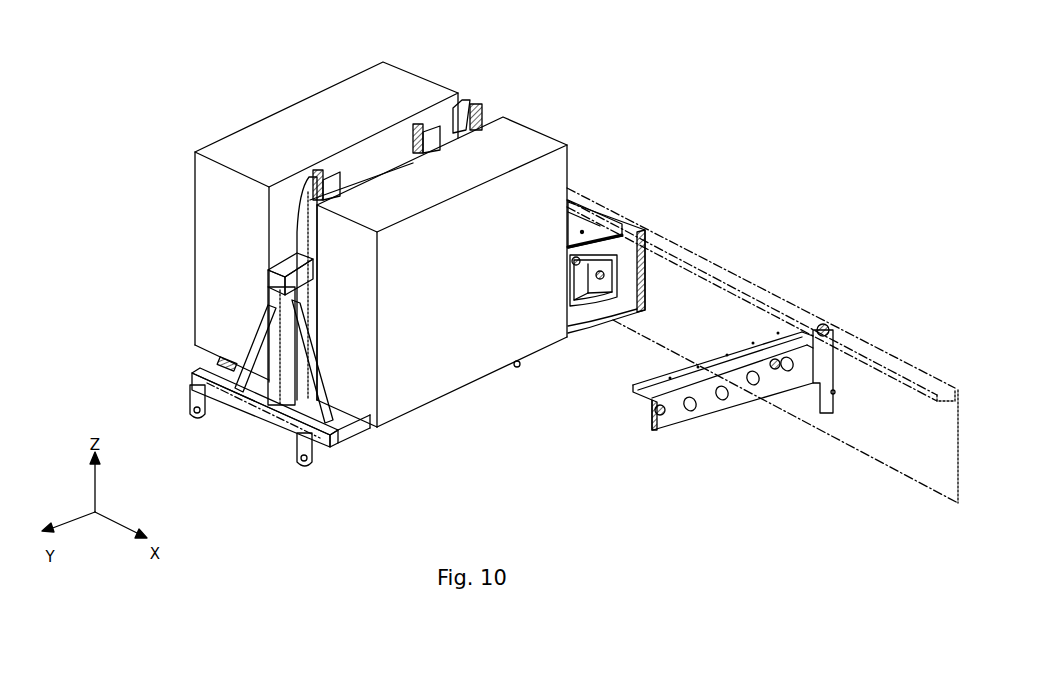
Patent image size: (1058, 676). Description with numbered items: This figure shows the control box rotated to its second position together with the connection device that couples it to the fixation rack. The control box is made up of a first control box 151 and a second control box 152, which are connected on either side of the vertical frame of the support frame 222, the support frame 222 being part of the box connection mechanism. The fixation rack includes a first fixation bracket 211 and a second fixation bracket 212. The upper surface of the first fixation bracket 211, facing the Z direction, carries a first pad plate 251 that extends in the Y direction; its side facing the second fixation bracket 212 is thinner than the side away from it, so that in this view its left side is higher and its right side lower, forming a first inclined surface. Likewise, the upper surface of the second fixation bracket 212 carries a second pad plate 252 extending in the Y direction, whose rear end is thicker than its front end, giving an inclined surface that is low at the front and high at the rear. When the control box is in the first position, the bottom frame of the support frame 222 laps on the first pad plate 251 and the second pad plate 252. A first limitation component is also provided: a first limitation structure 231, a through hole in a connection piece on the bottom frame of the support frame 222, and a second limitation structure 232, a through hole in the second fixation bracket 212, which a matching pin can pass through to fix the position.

The first control box 151 is at (393, 85).
The second control box 152 is at (523, 137).
The first fixation bracket 211 is at (627, 255).
The second fixation bracket 212 is at (688, 417).
The support frame 222 is at (270, 305).
The first limitation structure 231 is at (195, 413).
The second limitation structure 232 is at (657, 411).
The first pad plate 251 is at (588, 223).
The second pad plate 252 is at (787, 328).